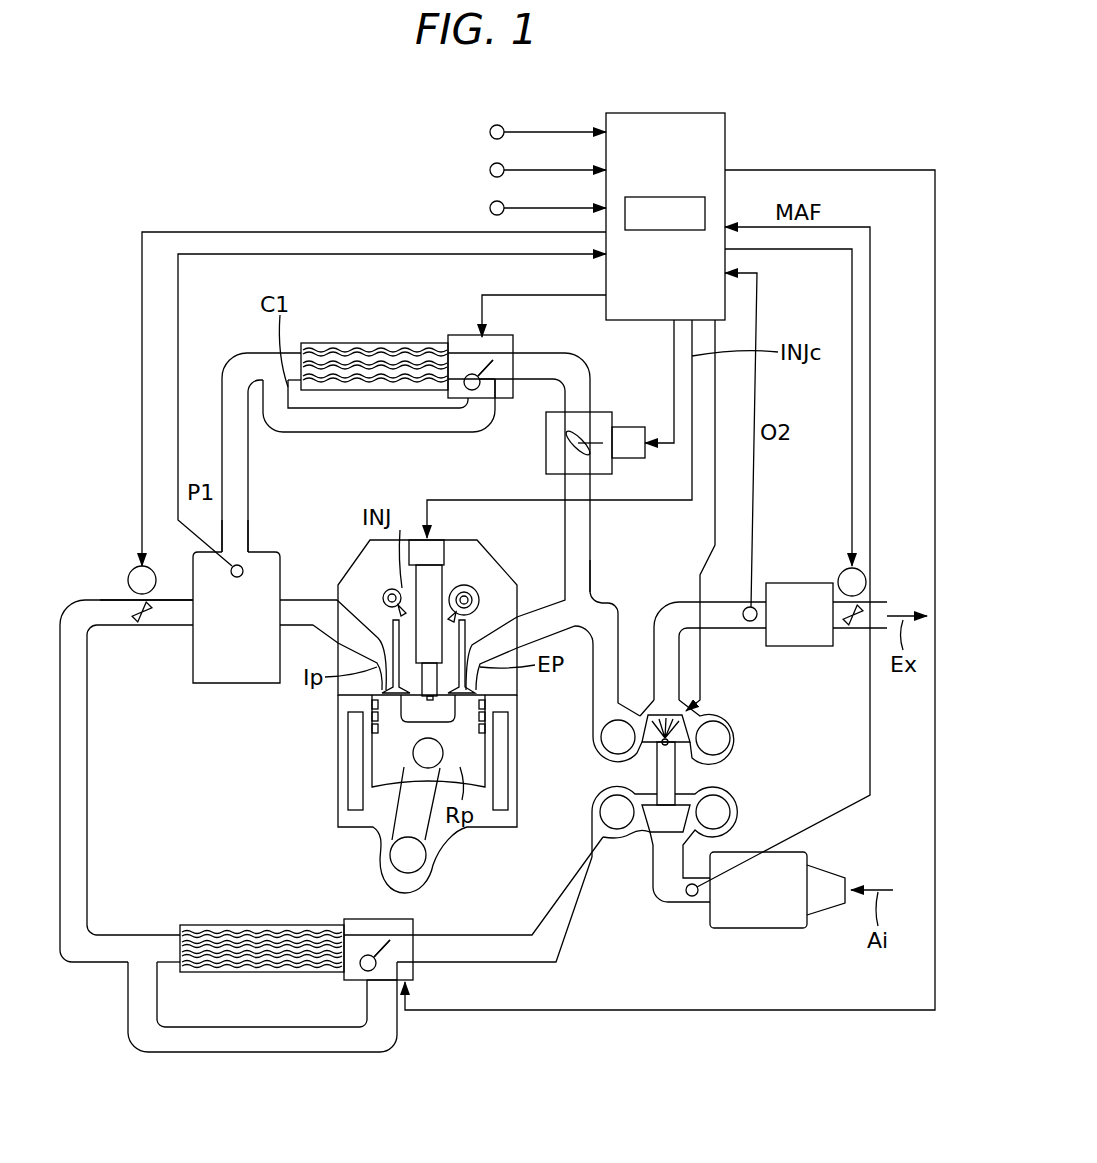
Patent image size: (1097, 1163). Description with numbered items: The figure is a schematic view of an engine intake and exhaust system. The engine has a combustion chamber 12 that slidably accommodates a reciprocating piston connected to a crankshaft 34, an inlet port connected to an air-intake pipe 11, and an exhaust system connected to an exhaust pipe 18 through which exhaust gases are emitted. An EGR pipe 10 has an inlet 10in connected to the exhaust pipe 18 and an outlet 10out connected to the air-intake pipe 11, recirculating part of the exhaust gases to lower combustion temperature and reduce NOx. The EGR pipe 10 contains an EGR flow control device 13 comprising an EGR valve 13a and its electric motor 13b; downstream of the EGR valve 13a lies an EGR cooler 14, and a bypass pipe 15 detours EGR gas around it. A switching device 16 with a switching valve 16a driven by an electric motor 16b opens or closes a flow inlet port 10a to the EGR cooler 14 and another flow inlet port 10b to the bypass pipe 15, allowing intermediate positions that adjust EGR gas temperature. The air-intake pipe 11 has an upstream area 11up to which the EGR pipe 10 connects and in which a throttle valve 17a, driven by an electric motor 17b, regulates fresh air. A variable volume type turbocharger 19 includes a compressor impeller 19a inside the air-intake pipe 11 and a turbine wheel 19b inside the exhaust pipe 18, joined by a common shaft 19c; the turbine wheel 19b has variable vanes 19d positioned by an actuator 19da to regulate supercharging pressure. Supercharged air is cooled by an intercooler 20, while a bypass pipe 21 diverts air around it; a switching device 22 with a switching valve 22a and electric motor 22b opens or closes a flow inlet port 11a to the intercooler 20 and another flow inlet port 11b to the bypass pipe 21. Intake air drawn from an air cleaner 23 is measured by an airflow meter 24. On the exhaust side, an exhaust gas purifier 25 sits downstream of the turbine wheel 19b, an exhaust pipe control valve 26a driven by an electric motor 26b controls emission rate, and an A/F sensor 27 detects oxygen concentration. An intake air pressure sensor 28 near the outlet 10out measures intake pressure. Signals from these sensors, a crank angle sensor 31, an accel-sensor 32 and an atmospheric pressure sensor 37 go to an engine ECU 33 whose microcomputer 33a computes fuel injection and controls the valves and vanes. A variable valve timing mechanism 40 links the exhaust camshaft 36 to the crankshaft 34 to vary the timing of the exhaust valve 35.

The EGR pipe 10 is at (250, 478).
The flow inlet port 10a is at (465, 360).
The flow inlet port 10b is at (487, 392).
The inlet 10in is at (590, 588).
The outlet 10out is at (228, 541).
The air-intake pipe 11 is at (88, 765).
The flow inlet port 11a is at (350, 924).
The flow inlet port 11b is at (383, 982).
The upstream area 11up is at (177, 628).
The combustion chamber 12 is at (420, 718).
The EGR flow control device 13 is at (546, 455).
The EGR valve 13a is at (575, 432).
The electric motor 13b is at (628, 425).
The EGR cooler 14 is at (388, 343).
The bypass pipe 15 is at (358, 432).
The switching device 16 is at (455, 402).
The switching valve 16a is at (490, 358).
The electric motor 16b is at (483, 370).
The throttle valve 17a is at (142, 625).
The electric motor 17b is at (128, 580).
The exhaust pipe 18 is at (578, 680).
The variable volume type turbocharger 19 is at (692, 795).
The compressor impeller 19a is at (695, 844).
The turbine wheel 19b is at (700, 712).
The common shaft 19c is at (676, 775).
The variable vanes 19d is at (690, 730).
The actuator 19da is at (662, 745).
The intercooler 20 is at (222, 925).
The bypass pipe 21 is at (222, 1053).
The switching device 22 is at (352, 982).
The switching valve 22a is at (365, 948).
The electric motor 22b is at (385, 958).
The air cleaner 23 is at (768, 928).
The airflow meter 24 is at (690, 897).
The exhaust gas purifier 25 is at (790, 583).
The exhaust pipe control valve 26a is at (856, 626).
The electric motor 26b is at (842, 570).
The A/F sensor 27 is at (750, 622).
The intake air pressure sensor 28 is at (242, 566).
The crank angle sensor 31 is at (490, 170).
The accel-sensor 32 is at (490, 208).
The engine ECU 33 is at (645, 113).
The microcomputer 33a is at (685, 197).
The crankshaft 34 is at (425, 864).
The exhaust valve 35 is at (467, 630).
The exhaust camshaft 36 is at (467, 588).
The atmospheric pressure sensor 37 is at (490, 132).
The variable valve timing mechanism 40 is at (450, 556).